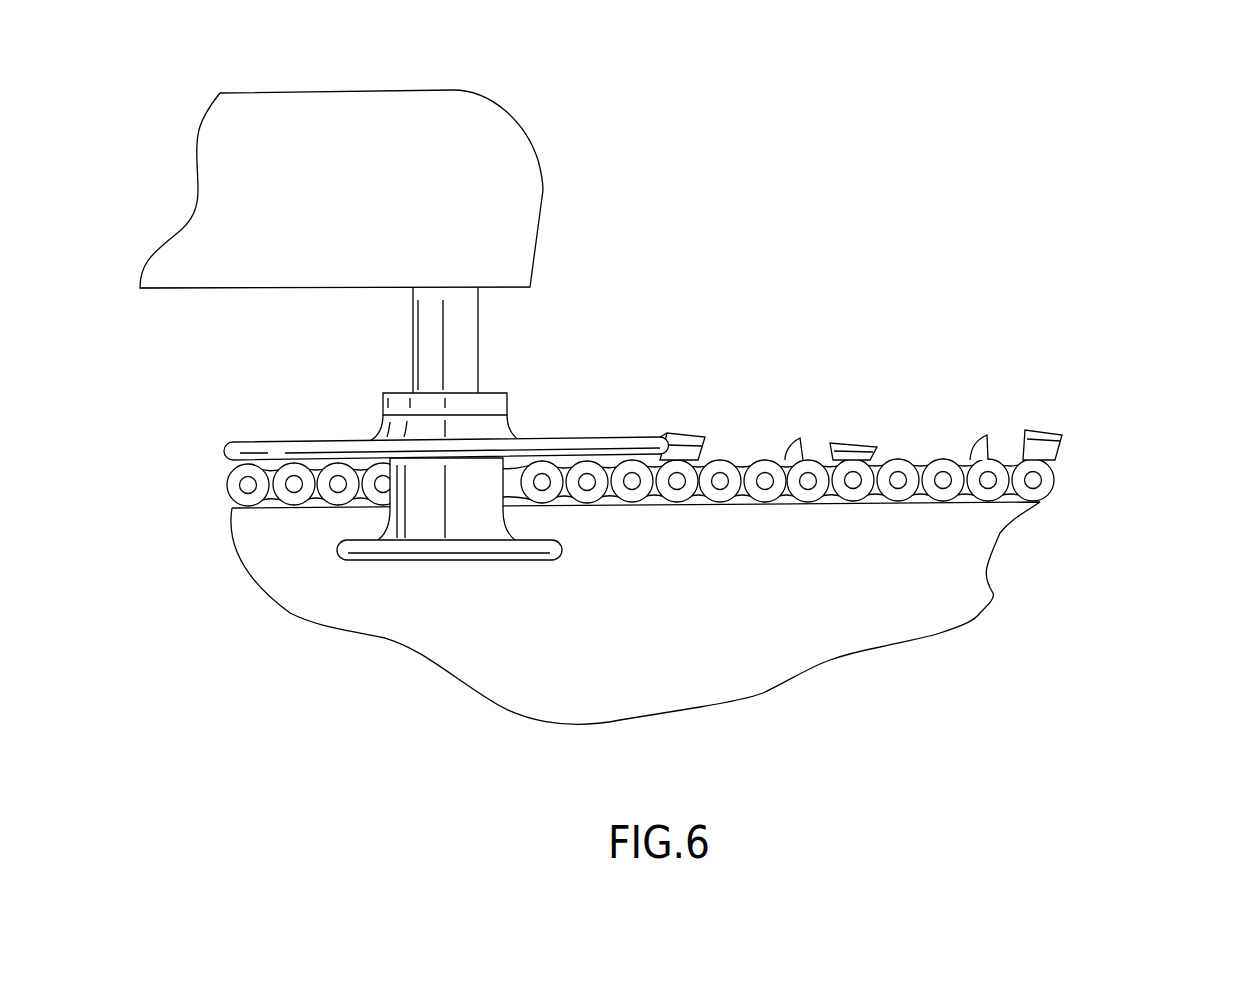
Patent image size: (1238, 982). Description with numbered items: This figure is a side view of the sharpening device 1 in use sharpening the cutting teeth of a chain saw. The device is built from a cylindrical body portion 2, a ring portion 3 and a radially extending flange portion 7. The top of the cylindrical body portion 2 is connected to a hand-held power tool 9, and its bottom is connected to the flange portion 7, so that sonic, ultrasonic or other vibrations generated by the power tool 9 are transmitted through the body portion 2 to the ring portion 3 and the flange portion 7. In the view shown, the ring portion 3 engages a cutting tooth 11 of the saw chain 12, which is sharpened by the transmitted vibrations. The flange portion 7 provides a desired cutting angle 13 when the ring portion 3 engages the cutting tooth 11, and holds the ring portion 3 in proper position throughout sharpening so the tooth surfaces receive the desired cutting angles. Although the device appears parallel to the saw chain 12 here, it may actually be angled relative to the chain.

The sharpening device 1 is at (189, 77).
The cylindrical body portion 2 is at (499, 356).
The ring portion 3 is at (548, 436).
The radially extending flange portion 7 is at (493, 570).
The hand-held power tool 9 is at (522, 113).
The cutting tooth 11 is at (698, 422).
The saw chain 12 is at (1070, 476).
The cutting angle 13 is at (668, 460).